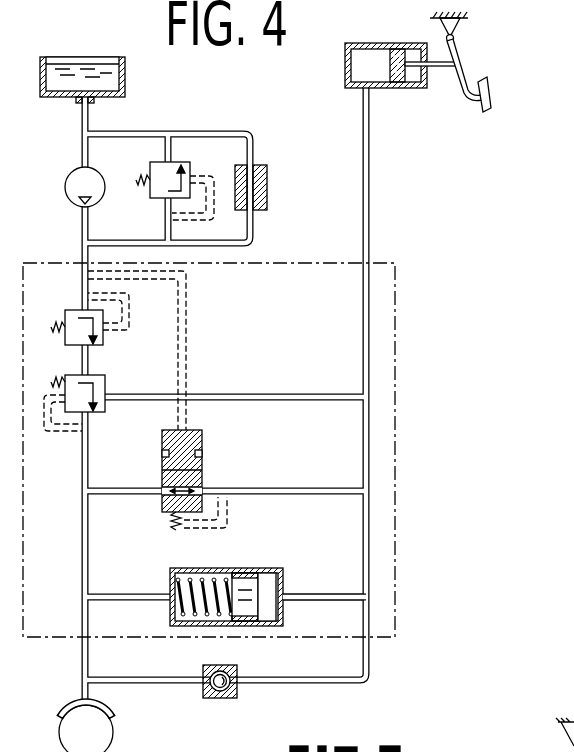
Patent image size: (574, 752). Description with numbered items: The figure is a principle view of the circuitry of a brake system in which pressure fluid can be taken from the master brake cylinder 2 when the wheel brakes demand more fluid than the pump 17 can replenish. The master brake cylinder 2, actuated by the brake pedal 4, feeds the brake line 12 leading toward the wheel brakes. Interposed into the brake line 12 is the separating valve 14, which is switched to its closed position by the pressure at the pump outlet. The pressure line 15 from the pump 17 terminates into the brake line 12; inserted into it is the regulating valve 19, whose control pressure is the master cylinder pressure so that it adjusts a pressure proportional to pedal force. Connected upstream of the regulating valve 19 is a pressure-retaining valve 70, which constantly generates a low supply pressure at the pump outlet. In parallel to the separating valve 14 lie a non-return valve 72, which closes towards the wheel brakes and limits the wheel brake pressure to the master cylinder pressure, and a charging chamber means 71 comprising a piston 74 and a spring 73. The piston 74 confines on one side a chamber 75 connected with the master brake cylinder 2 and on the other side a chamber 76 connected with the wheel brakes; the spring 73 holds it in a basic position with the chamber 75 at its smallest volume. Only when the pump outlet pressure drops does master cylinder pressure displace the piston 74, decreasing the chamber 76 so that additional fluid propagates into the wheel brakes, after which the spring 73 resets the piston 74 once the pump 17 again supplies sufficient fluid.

The master brake cylinder 2 is at (404, 90).
The brake pedal 4 is at (468, 100).
The brake line 12 is at (370, 164).
The separating valve 14 is at (200, 470).
The pressure line 15 is at (88, 465).
The pump 17 is at (72, 182).
The regulating valve 19 is at (113, 385).
The pressure-retaining valve 70 is at (112, 341).
The charging chamber means 71 is at (288, 618).
The non-return valve 72 is at (222, 670).
The spring 73 is at (173, 613).
The piston 74 is at (243, 588).
The chamber 75 is at (228, 585).
The chamber 76 is at (195, 568).